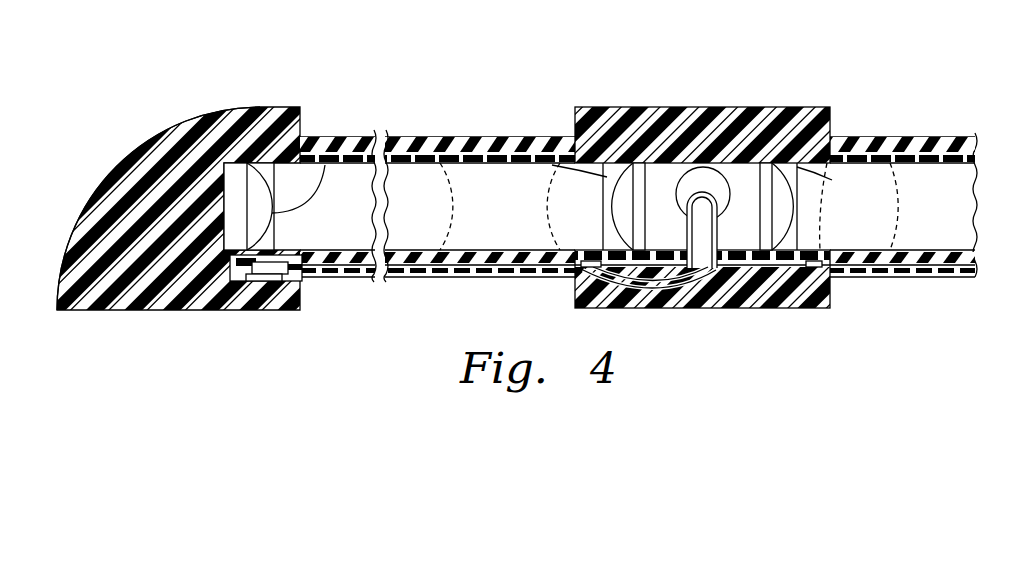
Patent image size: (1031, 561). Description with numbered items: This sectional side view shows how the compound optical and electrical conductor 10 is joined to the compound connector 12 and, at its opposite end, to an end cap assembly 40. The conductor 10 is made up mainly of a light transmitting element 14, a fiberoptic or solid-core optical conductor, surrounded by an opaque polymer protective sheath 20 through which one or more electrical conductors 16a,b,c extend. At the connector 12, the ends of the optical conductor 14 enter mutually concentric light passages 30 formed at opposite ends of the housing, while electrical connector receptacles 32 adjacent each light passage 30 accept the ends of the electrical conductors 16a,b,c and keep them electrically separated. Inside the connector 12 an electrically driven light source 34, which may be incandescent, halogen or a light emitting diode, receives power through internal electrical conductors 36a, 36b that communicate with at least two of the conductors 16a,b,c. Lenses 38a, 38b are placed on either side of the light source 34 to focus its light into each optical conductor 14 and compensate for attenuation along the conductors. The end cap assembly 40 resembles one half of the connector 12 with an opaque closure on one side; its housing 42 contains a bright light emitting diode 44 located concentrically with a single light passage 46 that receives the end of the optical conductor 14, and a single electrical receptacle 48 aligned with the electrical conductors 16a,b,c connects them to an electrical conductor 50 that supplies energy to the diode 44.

The compound optical and electrical conductor 10 is at (447, 88).
The compound connector 12 is at (697, 62).
The light transmitting element 14 is at (357, 225).
The electrical conductors 16a,b,c is at (637, 304).
The protective sheath 20 is at (637, 166).
The light passages 30 is at (843, 128).
The electrical connector receptacles 32 is at (857, 297).
The light source 34 is at (731, 178).
The electrical conductor 36a is at (649, 309).
The electrical conductor 36b is at (735, 282).
The lens 38a is at (613, 205).
The lens 38b is at (792, 214).
The end cap assembly 40 is at (162, 96).
The housing 42 is at (158, 208).
The bright light emitting diode 44 is at (283, 181).
The light passage 46 is at (318, 158).
The electrical receptacle 48 is at (302, 295).
The electrical conductor 50 is at (256, 316).